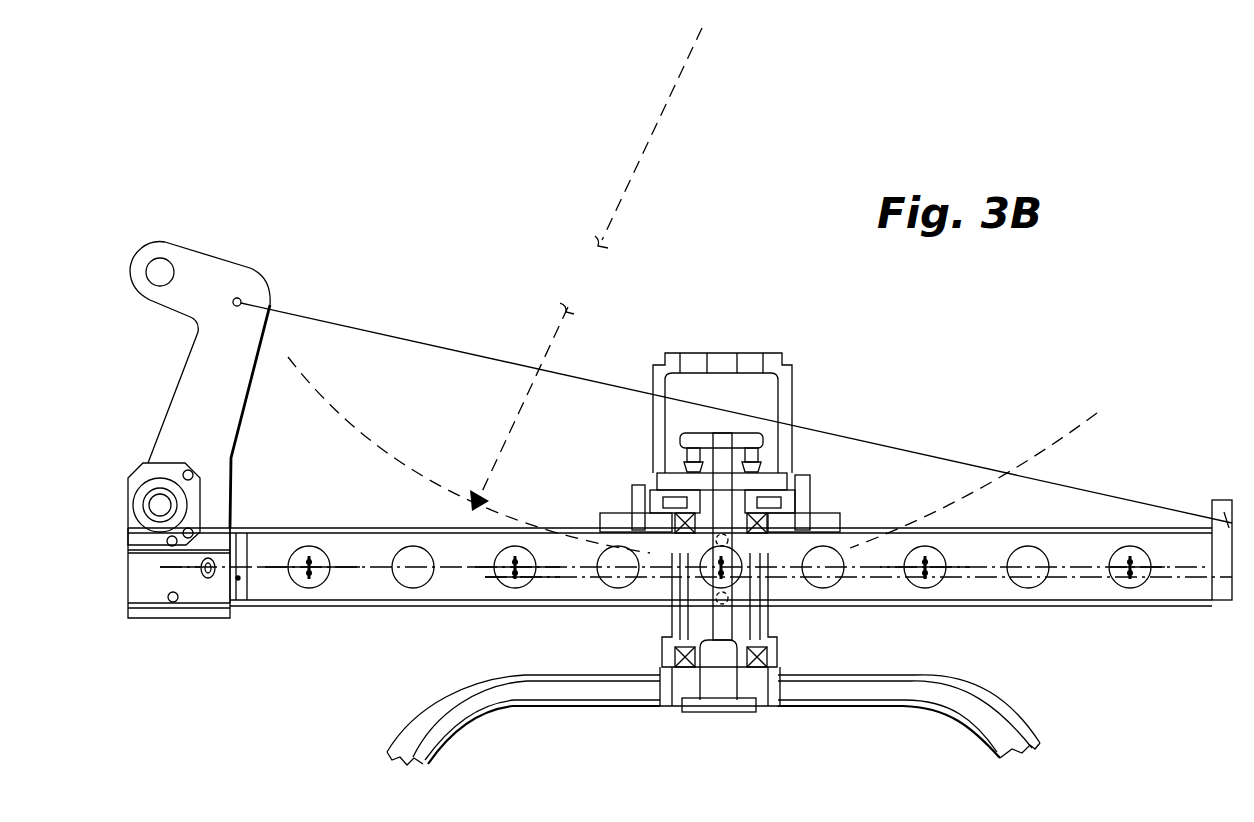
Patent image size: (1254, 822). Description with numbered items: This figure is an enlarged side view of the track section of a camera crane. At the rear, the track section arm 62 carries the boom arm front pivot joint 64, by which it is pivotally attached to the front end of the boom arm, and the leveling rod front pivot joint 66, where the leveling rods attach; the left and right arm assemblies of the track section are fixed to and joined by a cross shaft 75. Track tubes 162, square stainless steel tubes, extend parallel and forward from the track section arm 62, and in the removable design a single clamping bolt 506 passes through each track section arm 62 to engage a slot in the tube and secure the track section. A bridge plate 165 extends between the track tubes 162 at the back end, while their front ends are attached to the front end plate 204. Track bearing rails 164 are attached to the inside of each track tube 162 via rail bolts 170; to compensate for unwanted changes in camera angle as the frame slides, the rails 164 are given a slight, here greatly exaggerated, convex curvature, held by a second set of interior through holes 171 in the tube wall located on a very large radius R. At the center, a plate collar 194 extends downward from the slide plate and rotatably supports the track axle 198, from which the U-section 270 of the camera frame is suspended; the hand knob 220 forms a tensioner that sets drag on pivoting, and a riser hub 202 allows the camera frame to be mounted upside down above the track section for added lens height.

The track section arm 62 is at (207, 272).
The leveling rod front pivot joint 66 is at (155, 273).
The boom arm front pivot joint 64 is at (150, 466).
The cross shaft 75 is at (157, 508).
The bridge plate 165 is at (243, 538).
The track tube 162 is at (278, 590).
The clamping bolt 506 is at (208, 578).
The rail bolt 170 is at (516, 558).
The interior through hole 171 is at (512, 586).
The track bearing rail 164 is at (1053, 454).
The riser hub 202 is at (786, 378).
The hand knob 220 is at (755, 444).
The plate collar 194 is at (672, 655).
The track axle 198 is at (777, 678).
The U-section 270 is at (995, 690).
The front end plate 204 is at (1222, 510).
The radius R is at (652, 136).